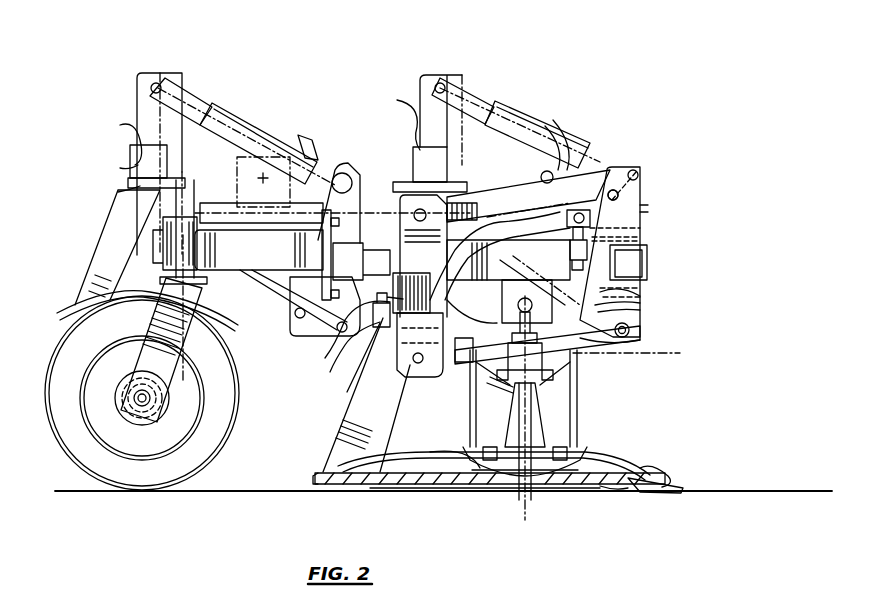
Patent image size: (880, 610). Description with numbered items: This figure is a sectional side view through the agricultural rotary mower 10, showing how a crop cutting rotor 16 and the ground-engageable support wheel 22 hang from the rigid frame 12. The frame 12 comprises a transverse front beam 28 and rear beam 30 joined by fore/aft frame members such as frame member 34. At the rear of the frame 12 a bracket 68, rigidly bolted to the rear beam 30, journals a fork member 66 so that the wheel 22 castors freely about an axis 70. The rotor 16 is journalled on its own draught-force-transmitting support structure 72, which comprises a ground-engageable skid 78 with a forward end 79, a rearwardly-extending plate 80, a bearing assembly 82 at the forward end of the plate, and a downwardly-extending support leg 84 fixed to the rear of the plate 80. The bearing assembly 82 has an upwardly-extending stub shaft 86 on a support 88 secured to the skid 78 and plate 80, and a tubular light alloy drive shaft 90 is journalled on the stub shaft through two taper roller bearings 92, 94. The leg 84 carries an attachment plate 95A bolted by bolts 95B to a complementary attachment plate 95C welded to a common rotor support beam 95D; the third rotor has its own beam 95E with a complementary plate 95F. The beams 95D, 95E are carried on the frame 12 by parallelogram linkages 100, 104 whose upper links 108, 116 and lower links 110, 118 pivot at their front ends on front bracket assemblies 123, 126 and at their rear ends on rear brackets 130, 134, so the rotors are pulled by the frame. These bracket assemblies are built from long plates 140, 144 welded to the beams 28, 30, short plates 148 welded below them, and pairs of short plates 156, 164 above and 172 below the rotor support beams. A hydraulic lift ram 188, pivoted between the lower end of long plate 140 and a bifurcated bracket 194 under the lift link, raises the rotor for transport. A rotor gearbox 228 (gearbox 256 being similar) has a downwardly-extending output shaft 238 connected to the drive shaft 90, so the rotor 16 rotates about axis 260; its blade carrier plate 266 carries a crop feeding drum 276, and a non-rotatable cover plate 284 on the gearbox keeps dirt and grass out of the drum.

The agricultural rotary mower 10 is at (556, 112).
The frame 12 is at (643, 239).
The first crop cutting rotor 16 is at (592, 448).
The ground-engageable support wheel 22 is at (243, 378).
The front beam 28 is at (648, 258).
The rear beam 30 is at (373, 240).
The frame member 34 is at (457, 278).
The fork member 66 is at (93, 296).
The bracket 68 is at (246, 278).
The castor axis 70 is at (114, 277).
The support structure 72 is at (338, 412).
The skid 78 is at (622, 491).
The forward end of skid 79 is at (657, 492).
The plate 80 is at (330, 482).
The bearing assembly 82 is at (550, 418).
The support leg 84 is at (106, 218).
The stub shaft 86 is at (492, 440).
The support 88 is at (458, 480).
The drive shaft 90 is at (484, 418).
The taper roller bearing 92 is at (550, 483).
The taper roller bearing 94 is at (582, 400).
The attachment plate 95A is at (118, 192).
The bolts 95B is at (329, 350).
The complementary attachment plate 95C is at (330, 372).
The rotor support beam 95D is at (414, 105).
The rotor support beam 95E is at (122, 146).
The complementary attachment plate 95F is at (120, 173).
The parallelogram linkage 100 is at (557, 138).
The parallelogram linkage 104 is at (264, 125).
The upper link 108 is at (517, 112).
The lower link 110 is at (628, 310).
The upper link 116 is at (288, 134).
The lower link 118 is at (305, 338).
The front bracket assembly 123 is at (643, 177).
The front bracket assembly 126 is at (364, 172).
The rear bracket 130 is at (456, 76).
The rear bracket 134 is at (170, 77).
The long plate 140 is at (643, 207).
The long plate 144 is at (315, 192).
The short plate 148 is at (640, 298).
The short plate 156 is at (467, 86).
The short plate 164 is at (186, 84).
The short plate 172 is at (407, 377).
The hydraulic lift ram 188 is at (541, 256).
The bifurcated bracket 194 is at (530, 191).
The rotor gearbox 228 is at (590, 148).
The output shaft 238 is at (562, 356).
The rotor gearbox 256 is at (237, 178).
The rotor axis 260 is at (514, 492).
The blade carrier plate 266 is at (629, 471).
The crop feeding member 276 is at (585, 430).
The cover plate 284 is at (634, 336).